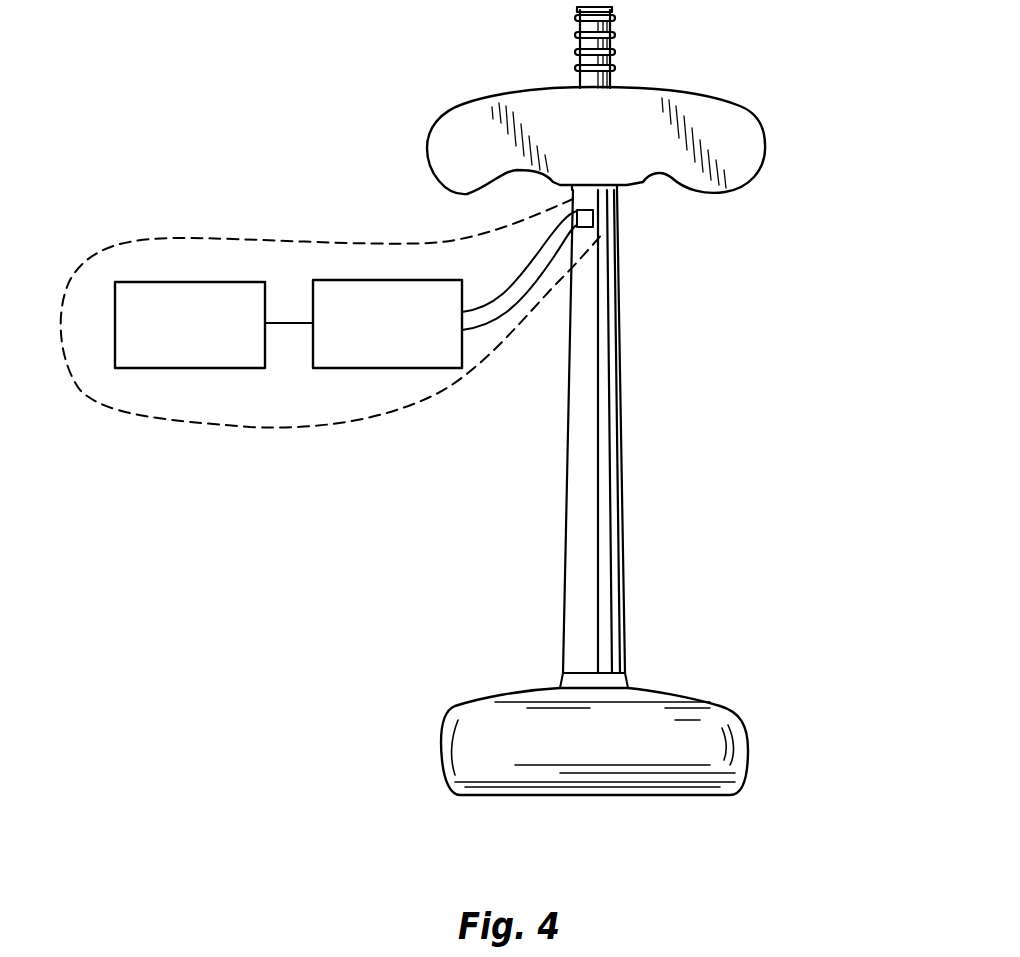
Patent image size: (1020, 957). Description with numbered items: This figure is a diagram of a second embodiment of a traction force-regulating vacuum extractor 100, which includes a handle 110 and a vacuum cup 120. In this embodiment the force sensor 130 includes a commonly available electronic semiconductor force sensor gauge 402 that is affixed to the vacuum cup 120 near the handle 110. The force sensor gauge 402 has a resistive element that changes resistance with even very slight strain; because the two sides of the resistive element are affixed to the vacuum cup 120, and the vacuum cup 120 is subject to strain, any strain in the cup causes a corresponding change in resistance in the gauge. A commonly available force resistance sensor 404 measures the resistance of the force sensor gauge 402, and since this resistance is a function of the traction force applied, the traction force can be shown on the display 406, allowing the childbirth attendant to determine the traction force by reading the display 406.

The vacuum extractor 100 is at (653, 397).
The handle 110 is at (618, 144).
The vacuum cup 120 is at (668, 543).
The force sensor 130 is at (396, 360).
The force sensor gauge 402 is at (593, 218).
The force resistance sensor 404 is at (407, 360).
The display 406 is at (208, 349).